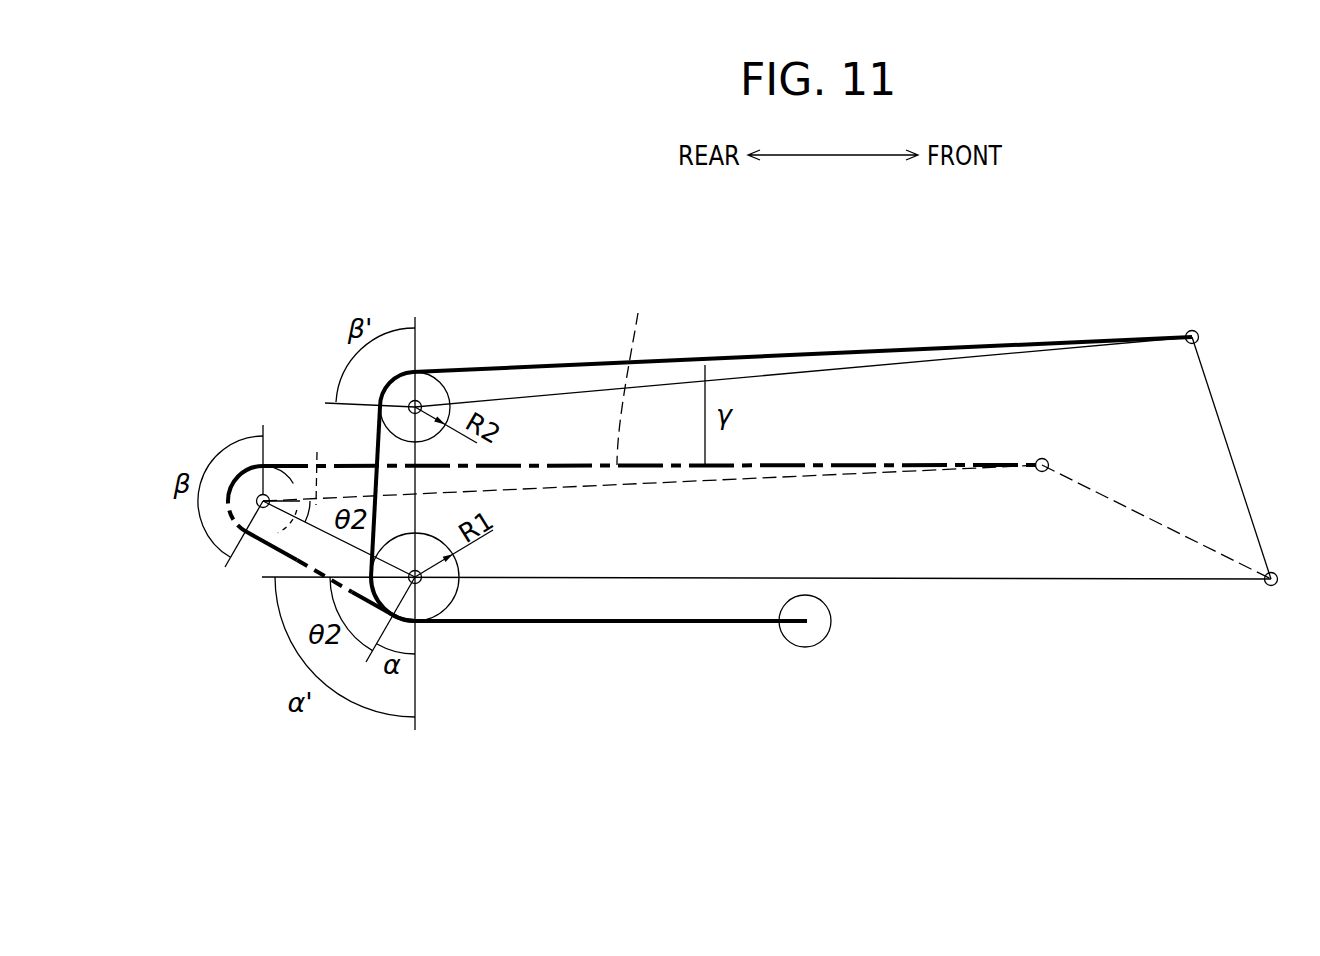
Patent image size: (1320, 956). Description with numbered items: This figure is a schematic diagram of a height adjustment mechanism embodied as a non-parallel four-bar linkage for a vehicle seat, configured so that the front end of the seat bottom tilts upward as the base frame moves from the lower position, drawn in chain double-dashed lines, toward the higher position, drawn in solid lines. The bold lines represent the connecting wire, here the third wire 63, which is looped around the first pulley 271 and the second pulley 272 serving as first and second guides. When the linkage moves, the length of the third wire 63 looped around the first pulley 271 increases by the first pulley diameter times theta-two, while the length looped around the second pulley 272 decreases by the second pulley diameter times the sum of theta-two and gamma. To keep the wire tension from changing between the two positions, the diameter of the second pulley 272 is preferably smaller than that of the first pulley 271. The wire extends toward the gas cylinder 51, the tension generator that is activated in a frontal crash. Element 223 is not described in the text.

The third wire 63 is at (600, 363).
The second pulley 272 is at (433, 390).
The first pulley 271 is at (437, 602).
The belt support portion 223 is at (380, 448).
The gas cylinder 51 is at (823, 638).